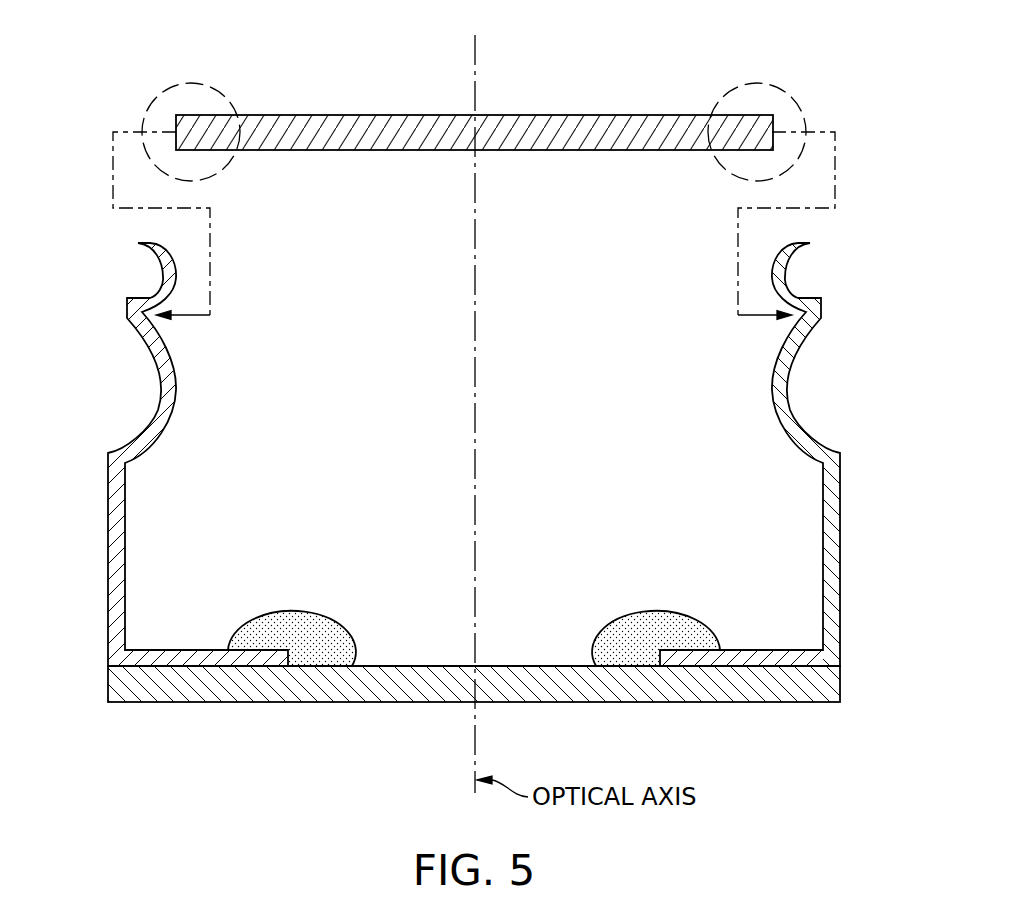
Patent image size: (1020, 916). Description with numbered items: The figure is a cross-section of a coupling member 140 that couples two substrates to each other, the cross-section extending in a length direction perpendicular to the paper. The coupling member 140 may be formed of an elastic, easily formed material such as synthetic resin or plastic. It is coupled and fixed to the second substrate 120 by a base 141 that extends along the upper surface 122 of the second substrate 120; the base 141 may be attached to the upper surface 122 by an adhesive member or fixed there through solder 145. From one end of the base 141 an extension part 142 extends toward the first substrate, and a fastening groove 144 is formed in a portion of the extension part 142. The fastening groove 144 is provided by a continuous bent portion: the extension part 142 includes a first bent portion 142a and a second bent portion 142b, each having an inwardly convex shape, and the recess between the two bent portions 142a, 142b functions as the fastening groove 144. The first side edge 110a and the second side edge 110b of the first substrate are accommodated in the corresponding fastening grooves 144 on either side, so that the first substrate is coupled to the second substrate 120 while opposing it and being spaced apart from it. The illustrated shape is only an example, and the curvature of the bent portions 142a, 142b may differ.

The first side edge 110a is at (193, 82).
The second side edge 110b is at (755, 82).
The second substrate 120 is at (375, 694).
The upper surface 122 is at (410, 665).
The coupling member 140 is at (80, 663).
The base 141 is at (188, 667).
The extension part 142 is at (108, 595).
The first bent portion 142a is at (155, 418).
The second bent portion 142b is at (158, 278).
The fastening groove 144 is at (170, 328).
The solder 145 is at (311, 637).